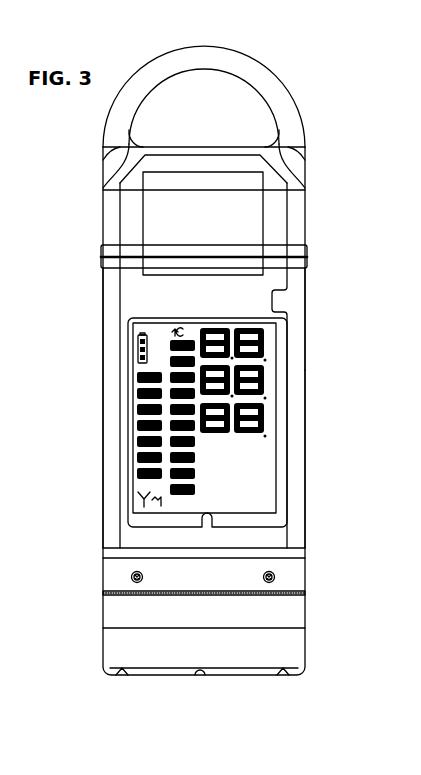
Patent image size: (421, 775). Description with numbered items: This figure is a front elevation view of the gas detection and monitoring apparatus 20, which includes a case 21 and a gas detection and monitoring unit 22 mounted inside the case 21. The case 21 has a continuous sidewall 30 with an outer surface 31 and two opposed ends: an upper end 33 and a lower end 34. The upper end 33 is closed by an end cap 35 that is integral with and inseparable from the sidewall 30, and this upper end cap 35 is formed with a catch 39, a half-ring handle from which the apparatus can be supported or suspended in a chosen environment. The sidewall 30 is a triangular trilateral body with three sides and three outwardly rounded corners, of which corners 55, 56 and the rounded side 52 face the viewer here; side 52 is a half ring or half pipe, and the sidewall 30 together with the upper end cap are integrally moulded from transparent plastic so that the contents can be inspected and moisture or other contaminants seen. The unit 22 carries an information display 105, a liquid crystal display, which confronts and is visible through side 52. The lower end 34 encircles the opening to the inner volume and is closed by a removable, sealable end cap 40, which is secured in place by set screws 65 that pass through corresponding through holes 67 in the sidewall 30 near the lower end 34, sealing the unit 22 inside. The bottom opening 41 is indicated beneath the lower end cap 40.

The gas detection and monitoring apparatus 20 is at (320, 126).
The case 21 is at (100, 390).
The gas detection and monitoring unit 22 is at (116, 526).
The continuous sidewall 30 is at (306, 347).
The outer surface 31 is at (289, 298).
The upper end 33 is at (306, 252).
The lower end 34 is at (307, 586).
The end cap 35 is at (292, 222).
The catch 39 is at (262, 65).
The end cap 40 is at (113, 623).
The bottom opening 41 is at (197, 675).
The side 52 is at (167, 298).
The corner 55 is at (306, 393).
The corner 56 is at (103, 437).
The set screws 65 is at (137, 583).
The through holes 67 is at (130, 578).
The information display 105 is at (270, 456).